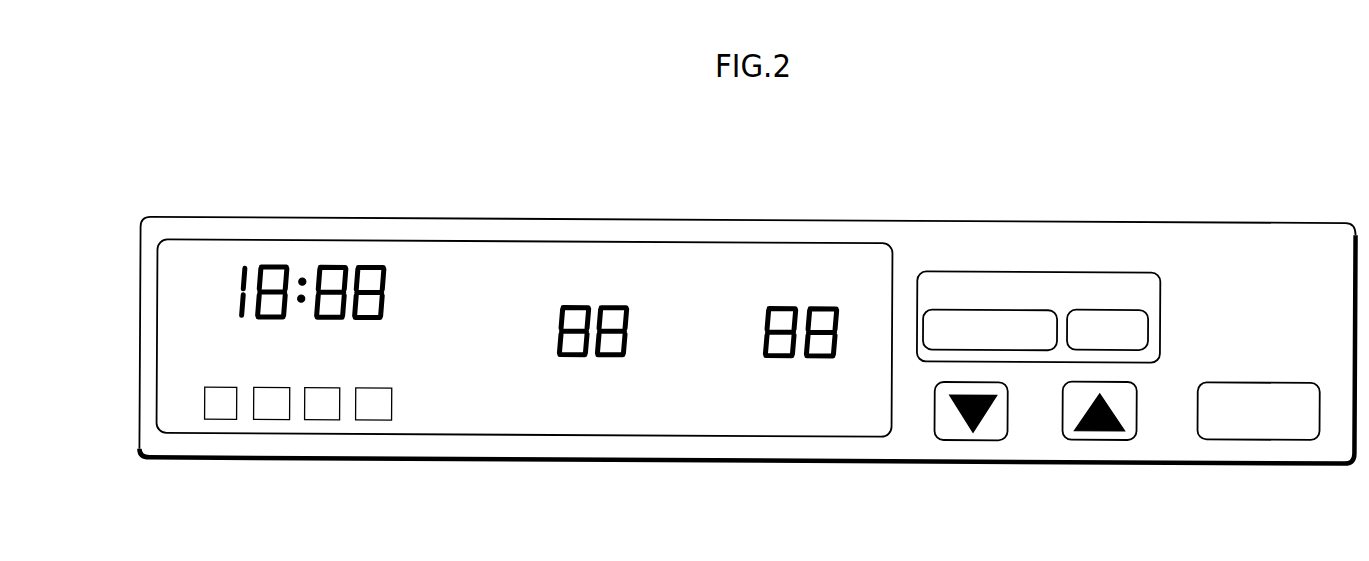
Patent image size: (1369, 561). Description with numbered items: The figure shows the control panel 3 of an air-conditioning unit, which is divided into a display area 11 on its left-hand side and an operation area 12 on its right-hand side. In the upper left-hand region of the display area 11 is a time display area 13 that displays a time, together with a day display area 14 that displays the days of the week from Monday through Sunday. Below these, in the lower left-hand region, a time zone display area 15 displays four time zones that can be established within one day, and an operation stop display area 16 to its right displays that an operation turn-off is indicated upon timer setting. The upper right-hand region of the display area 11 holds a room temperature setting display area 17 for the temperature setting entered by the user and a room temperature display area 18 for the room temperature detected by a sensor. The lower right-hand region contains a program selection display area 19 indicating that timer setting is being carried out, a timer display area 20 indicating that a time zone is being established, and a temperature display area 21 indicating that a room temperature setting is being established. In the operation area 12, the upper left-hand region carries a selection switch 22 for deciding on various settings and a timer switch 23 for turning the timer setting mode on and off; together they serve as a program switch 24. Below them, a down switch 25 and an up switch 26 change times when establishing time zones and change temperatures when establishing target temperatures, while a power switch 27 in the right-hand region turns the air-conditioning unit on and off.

The control panel 3 is at (715, 220).
The display area 11 is at (436, 240).
The operation area 12 is at (1233, 222).
The time display area 13 is at (303, 264).
The day display area 14 is at (165, 367).
The time zone display area 15 is at (200, 411).
The operation stop display area 16 is at (468, 418).
The room temperature setting display area 17 is at (590, 245).
The room temperature display area 18 is at (800, 244).
The program selection display area 19 is at (590, 419).
The timer display area 20 is at (838, 380).
The temperature display area 21 is at (798, 428).
The selection switch 22 is at (955, 308).
The timer switch 23 is at (1115, 307).
The program switch 24 is at (1023, 275).
The down switch 25 is at (973, 440).
The up switch 26 is at (1095, 440).
The power switch 27 is at (1273, 440).